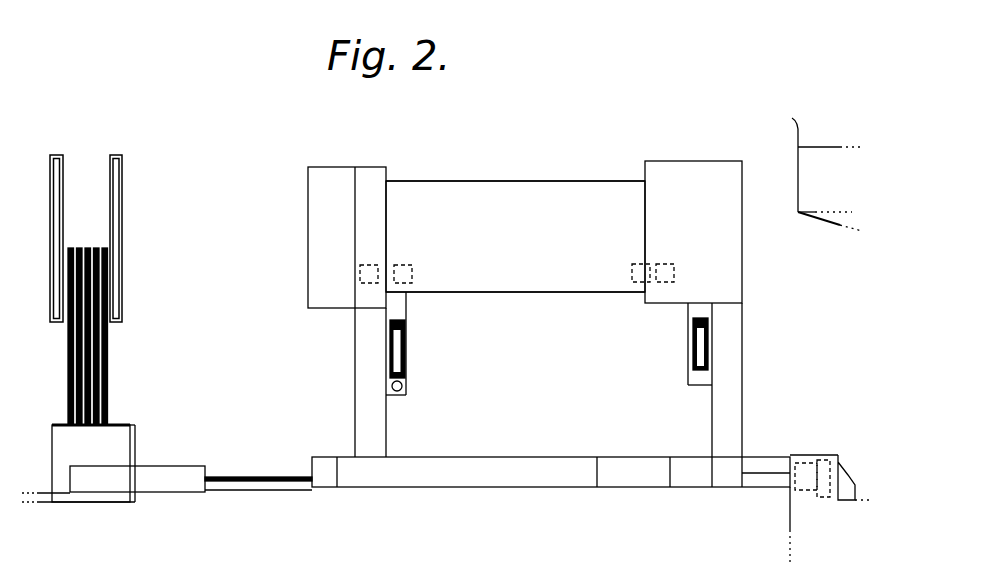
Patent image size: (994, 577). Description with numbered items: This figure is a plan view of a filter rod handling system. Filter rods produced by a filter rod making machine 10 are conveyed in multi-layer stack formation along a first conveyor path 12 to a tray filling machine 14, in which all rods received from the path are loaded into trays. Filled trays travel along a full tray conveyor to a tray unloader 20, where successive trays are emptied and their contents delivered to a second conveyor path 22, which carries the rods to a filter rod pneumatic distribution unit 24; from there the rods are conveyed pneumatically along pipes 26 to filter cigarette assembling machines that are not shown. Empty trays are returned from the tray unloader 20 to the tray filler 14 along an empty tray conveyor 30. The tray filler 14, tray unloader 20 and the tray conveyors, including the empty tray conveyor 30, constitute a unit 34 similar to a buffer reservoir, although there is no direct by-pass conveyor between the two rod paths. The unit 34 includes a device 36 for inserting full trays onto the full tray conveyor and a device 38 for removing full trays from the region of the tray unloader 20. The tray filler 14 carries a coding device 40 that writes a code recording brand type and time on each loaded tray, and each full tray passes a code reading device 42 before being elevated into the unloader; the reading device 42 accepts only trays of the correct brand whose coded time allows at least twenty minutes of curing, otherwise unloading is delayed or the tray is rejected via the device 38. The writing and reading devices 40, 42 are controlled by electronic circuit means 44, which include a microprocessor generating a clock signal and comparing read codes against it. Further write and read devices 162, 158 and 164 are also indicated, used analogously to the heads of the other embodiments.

The filter rod making machine 10 is at (806, 527).
The first conveyor path 12 is at (387, 432).
The tray filling machine 14 is at (328, 172).
The tray unloader 20 is at (686, 168).
The second conveyor path 22 is at (741, 337).
The filter rod pneumatic distribution unit 24 is at (121, 437).
The pipes 26 is at (93, 303).
The empty tray conveyor 30 is at (527, 181).
The unit 34 is at (554, 296).
The device for inserting full trays 36 is at (405, 310).
The device for removing full trays 38 is at (690, 370).
The coding device 40 is at (374, 262).
The code reading device 42 is at (632, 268).
The electronic circuit means 44 is at (811, 169).
The read head device 158 is at (410, 380).
The write head device 162 is at (668, 262).
The read head device 164 is at (408, 263).